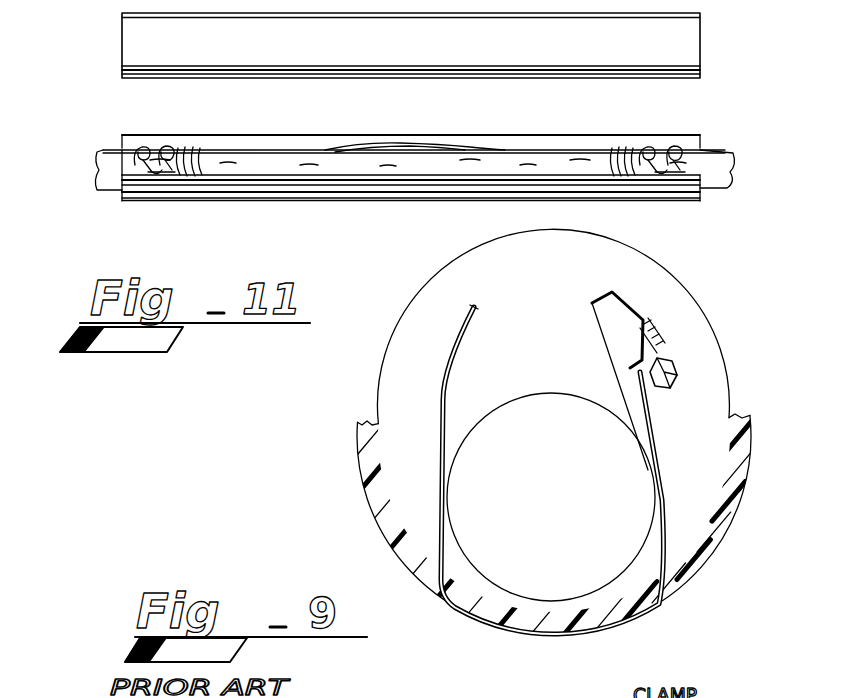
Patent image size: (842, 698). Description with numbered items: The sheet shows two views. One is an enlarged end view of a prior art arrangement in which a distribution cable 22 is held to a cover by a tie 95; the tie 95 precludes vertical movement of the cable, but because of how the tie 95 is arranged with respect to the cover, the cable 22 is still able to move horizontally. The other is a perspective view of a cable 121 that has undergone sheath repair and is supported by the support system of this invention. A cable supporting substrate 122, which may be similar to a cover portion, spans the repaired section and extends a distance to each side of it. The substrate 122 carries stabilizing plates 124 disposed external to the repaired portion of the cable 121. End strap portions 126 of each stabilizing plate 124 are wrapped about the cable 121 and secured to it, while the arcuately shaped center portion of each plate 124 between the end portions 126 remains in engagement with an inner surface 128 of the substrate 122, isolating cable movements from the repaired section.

In FIG. 11, the cable 121 is at (103, 150).
In FIG. 11, the cable supporting substrate 122 is at (668, 193).
In FIG. 11, the stabilizing plate 124 is at (170, 167).
In FIG. 11, the end strap portion 126 is at (733, 127).
In FIG. 11, the inner surface 128 is at (197, 143).
In FIG. 9, the distribution cable 22 is at (561, 417).
In FIG. 9, the tie 95 is at (450, 375).